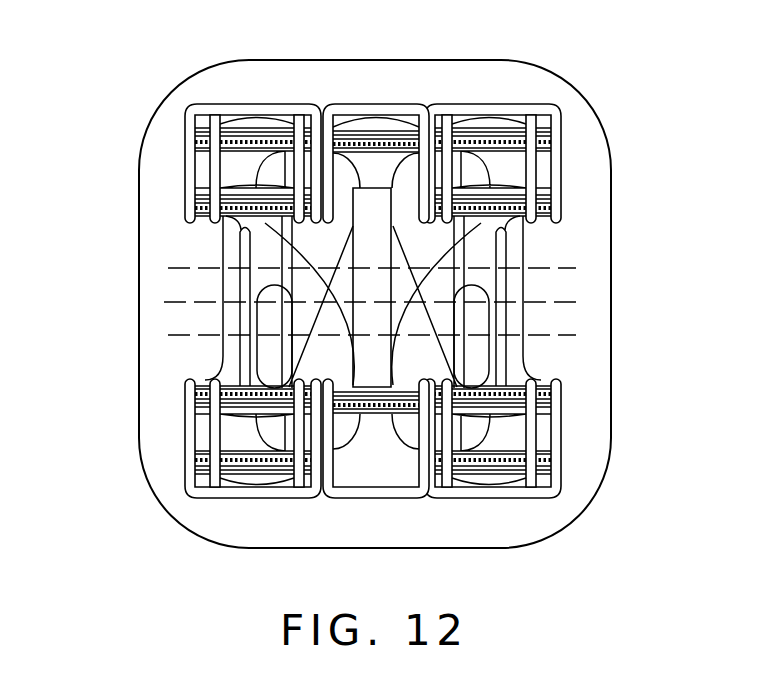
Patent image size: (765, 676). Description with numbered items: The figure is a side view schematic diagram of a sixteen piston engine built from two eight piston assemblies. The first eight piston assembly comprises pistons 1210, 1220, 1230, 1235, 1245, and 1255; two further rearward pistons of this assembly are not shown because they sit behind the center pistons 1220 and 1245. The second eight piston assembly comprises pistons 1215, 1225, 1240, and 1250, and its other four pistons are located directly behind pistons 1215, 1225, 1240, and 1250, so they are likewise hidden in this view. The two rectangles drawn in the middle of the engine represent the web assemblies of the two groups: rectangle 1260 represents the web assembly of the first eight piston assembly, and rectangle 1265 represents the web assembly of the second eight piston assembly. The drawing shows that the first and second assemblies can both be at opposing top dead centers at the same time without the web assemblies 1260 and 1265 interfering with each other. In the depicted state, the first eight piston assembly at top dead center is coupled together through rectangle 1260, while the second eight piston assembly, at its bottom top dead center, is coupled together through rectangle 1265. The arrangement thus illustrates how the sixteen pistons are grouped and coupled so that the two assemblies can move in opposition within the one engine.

The piston 1210 is at (196, 107).
The piston 1215 is at (277, 104).
The center piston 1220 is at (356, 104).
The piston 1225 is at (461, 104).
The piston 1230 is at (547, 106).
The piston 1235 is at (551, 497).
The piston 1240 is at (478, 497).
The center piston 1245 is at (367, 498).
The piston 1250 is at (264, 497).
The piston 1255 is at (187, 493).
The web assembly 1260 is at (383, 362).
The web assembly 1265 is at (383, 257).